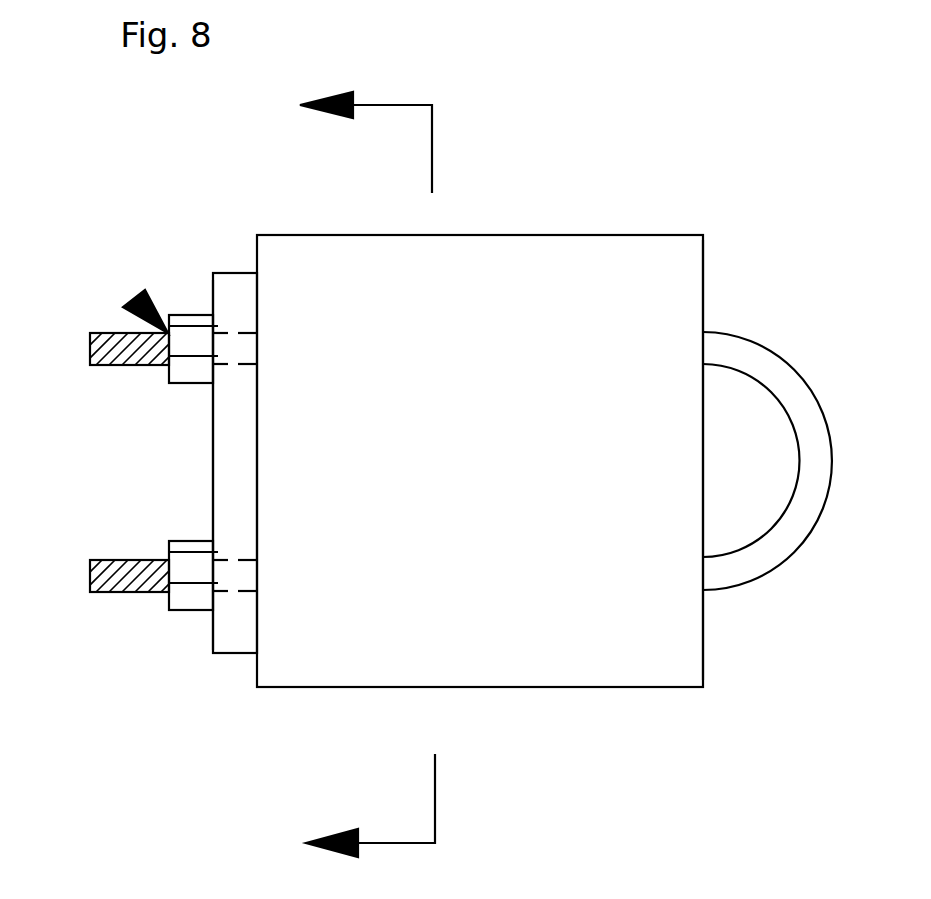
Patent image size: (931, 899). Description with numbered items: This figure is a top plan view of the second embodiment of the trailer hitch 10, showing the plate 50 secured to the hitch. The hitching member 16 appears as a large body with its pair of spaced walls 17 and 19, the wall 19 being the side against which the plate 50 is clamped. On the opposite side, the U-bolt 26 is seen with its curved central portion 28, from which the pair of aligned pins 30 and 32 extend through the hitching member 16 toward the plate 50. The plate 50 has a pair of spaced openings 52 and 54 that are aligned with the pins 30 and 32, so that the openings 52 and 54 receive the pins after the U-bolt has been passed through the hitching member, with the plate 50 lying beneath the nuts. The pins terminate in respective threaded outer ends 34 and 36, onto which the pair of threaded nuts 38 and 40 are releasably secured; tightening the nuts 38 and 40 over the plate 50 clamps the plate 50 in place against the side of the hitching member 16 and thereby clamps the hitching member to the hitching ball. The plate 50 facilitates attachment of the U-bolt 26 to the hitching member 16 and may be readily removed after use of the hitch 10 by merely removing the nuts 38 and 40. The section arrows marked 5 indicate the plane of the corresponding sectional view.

The section line 5- 5 is at (344, 477).
The trailer hitch 10 is at (150, 310).
The hitching member 16 is at (533, 687).
The spaced wall 17 is at (703, 288).
The spaced wall 19 is at (218, 452).
The U-bolt 26 is at (760, 575).
The curved central portion 28 is at (775, 355).
The pin 30 is at (133, 365).
The pin 32 is at (112, 593).
The threaded outer end 34 is at (90, 348).
The threaded outer end 36 is at (115, 558).
The threaded nut 38 is at (183, 315).
The threaded nut 40 is at (182, 613).
The plate 50 is at (225, 653).
The opening 52 is at (242, 350).
The opening 54 is at (242, 576).